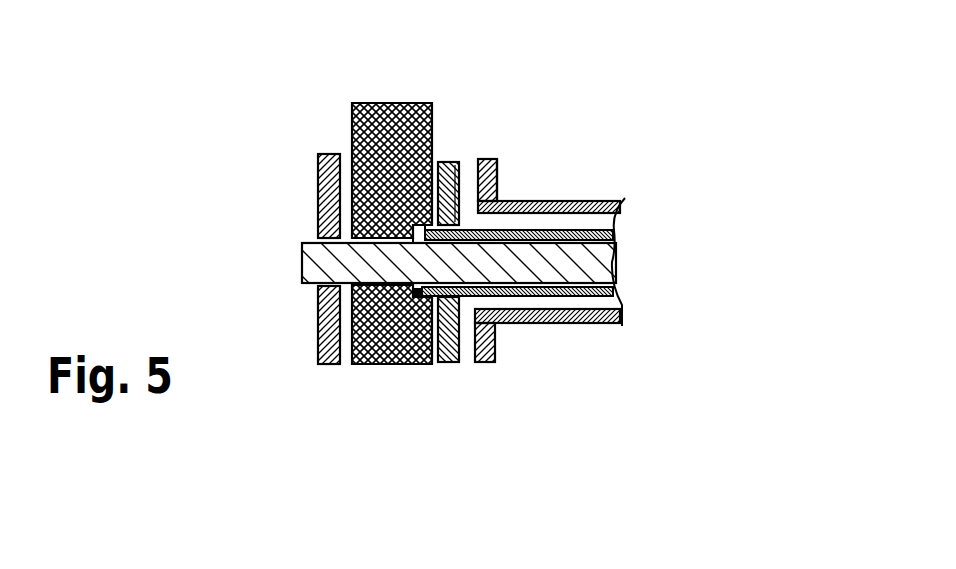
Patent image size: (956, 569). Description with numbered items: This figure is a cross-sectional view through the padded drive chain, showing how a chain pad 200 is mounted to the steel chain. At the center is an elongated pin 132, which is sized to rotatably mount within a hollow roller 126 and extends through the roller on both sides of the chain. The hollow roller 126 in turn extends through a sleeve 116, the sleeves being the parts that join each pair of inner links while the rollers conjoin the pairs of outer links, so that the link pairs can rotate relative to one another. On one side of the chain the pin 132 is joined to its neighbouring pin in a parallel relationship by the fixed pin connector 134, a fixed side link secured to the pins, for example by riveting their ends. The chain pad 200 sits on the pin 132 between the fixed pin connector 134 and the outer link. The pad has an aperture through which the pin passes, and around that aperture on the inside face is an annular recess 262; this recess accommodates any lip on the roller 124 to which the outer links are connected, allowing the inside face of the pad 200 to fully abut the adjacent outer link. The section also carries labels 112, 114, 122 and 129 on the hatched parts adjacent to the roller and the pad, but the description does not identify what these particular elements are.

The sleeve 112 is at (488, 362).
The sleeve inner surface 114 is at (497, 201).
The sleeve 116 is at (567, 323).
The seal ring 122 is at (445, 362).
The roller 124 is at (453, 220).
The hollow roller 126 is at (522, 297).
The gap 129 is at (436, 297).
The elongated pin 132 is at (302, 270).
The fixed pin connector 134 is at (330, 364).
The chain pad 200 is at (385, 364).
The annular recess 262 is at (411, 296).